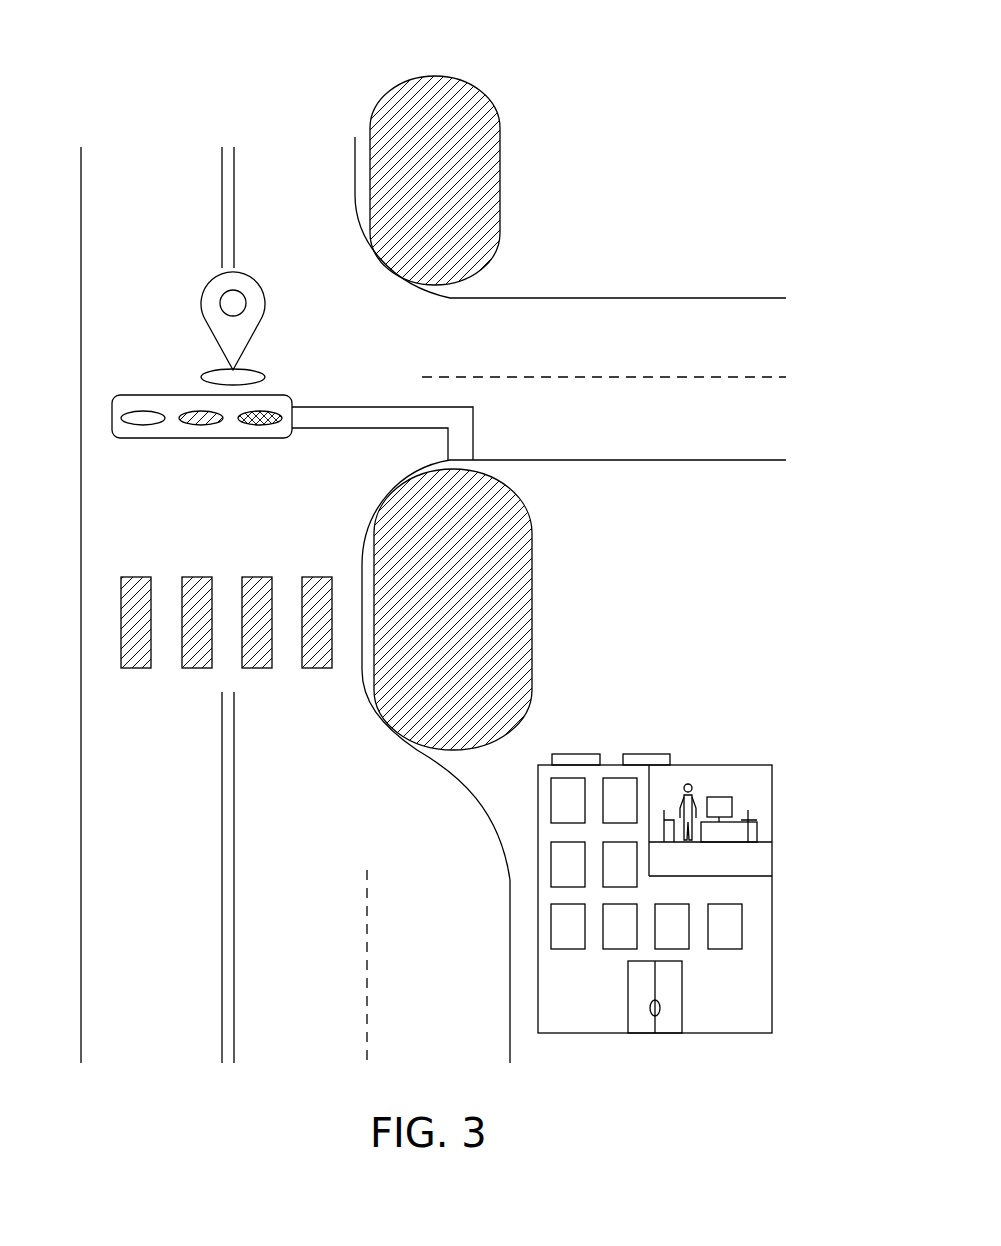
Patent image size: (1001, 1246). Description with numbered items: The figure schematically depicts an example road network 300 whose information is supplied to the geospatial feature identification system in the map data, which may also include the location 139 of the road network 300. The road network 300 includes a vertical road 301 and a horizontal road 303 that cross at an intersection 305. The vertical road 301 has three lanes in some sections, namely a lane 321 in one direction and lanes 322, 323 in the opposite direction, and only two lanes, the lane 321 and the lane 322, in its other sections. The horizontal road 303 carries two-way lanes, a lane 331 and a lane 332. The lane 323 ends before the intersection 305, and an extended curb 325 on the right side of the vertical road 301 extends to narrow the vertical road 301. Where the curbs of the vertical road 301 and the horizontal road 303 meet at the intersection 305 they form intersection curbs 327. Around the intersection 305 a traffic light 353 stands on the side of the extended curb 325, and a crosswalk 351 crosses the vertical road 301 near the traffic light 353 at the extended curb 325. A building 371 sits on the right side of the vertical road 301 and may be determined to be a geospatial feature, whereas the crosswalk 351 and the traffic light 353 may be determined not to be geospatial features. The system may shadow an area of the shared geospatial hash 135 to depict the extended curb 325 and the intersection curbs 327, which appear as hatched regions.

The road network 300 is at (718, 98).
The vertical road 301 is at (265, 86).
The horizontal road 303 is at (667, 266).
The intersection 305 is at (344, 376).
The shared geospatial hash 135 is at (458, 199).
The location 139 is at (201, 300).
The lane 321 is at (177, 1037).
The lane 322 is at (318, 1037).
The lane 323 is at (456, 1037).
The extended curb 325 is at (407, 754).
The intersection curbs 327 is at (386, 503).
The lane 331 is at (789, 354).
The lane 332 is at (791, 434).
The crosswalk 351 is at (240, 542).
The traffic light 353 is at (138, 393).
The building 371 is at (733, 765).